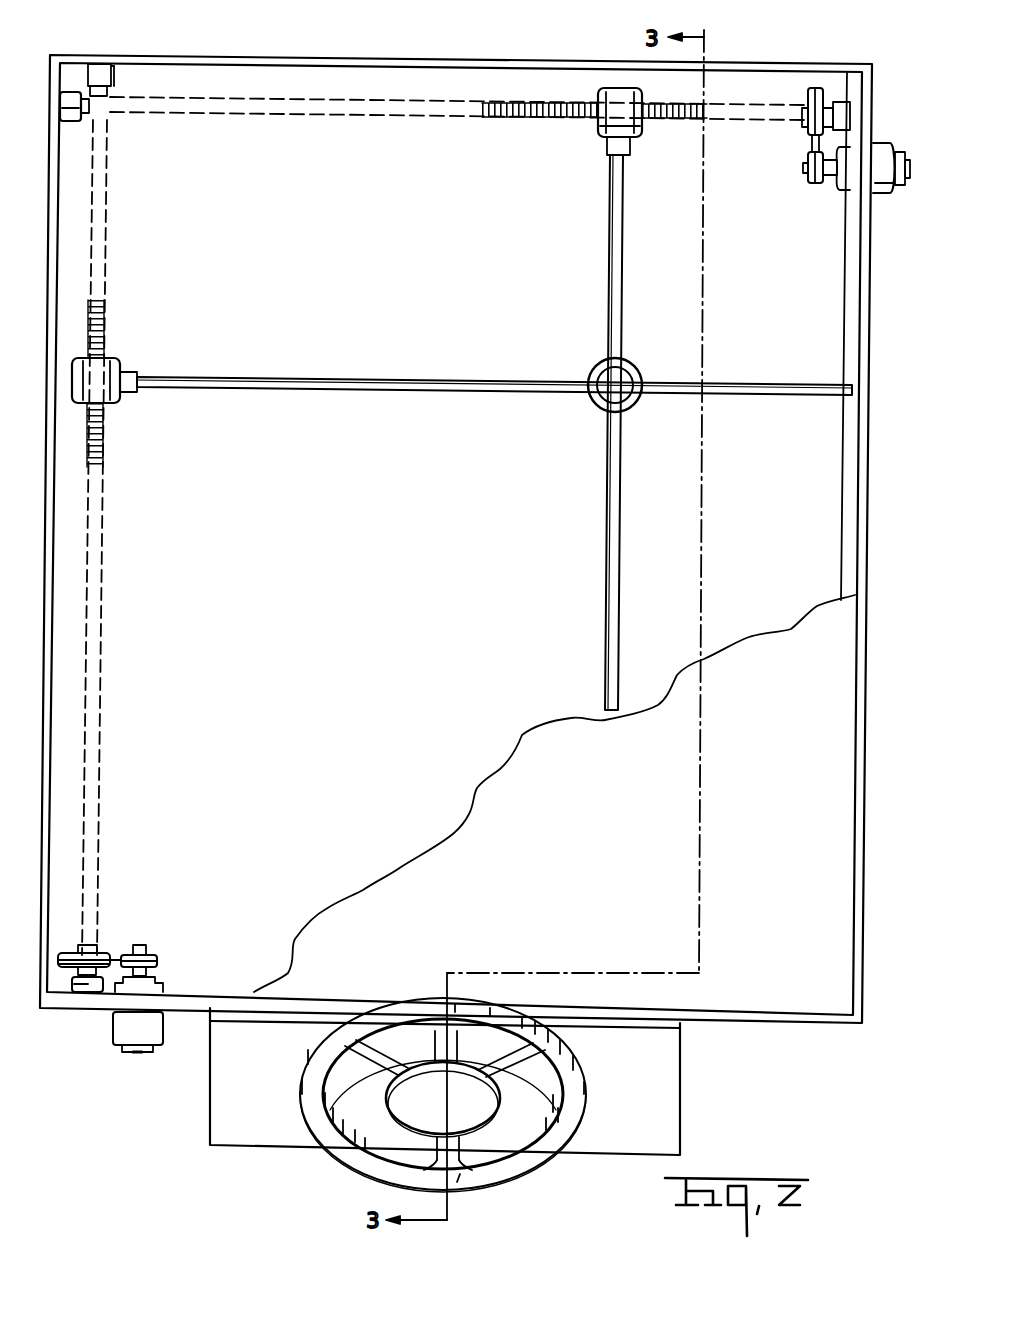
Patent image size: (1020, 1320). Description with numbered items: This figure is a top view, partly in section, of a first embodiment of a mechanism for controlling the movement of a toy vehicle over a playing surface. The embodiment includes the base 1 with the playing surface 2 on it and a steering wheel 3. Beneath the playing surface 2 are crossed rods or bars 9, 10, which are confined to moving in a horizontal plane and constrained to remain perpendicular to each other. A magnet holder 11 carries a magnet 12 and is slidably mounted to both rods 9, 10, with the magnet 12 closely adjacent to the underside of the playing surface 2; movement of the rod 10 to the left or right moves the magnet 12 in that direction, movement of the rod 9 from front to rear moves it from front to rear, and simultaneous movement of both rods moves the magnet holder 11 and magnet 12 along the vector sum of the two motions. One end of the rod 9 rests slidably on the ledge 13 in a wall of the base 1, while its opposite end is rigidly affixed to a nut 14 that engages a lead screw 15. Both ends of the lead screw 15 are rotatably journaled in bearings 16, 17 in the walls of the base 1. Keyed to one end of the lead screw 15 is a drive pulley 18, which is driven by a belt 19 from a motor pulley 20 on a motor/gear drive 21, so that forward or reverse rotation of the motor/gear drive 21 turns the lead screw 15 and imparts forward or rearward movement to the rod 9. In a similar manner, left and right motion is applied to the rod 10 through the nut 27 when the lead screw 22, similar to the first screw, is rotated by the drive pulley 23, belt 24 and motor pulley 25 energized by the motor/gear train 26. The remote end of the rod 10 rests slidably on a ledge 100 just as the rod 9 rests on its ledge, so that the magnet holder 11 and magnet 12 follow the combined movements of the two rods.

The base 1 is at (866, 756).
The playing surface 2 is at (834, 822).
The steering wheel 3 is at (330, 1135).
The rod 9 is at (360, 381).
The rod 10 is at (613, 570).
The magnet holder 11 is at (598, 405).
The magnet 12 is at (622, 382).
The ledge 13 is at (845, 480).
The nut 14 is at (117, 362).
The lead screw 15 is at (103, 497).
The bearing 16 is at (107, 72).
The bearing 17 is at (86, 984).
The drive pulley 18 is at (105, 950).
The belt 19 is at (158, 962).
The motor pulley 20 is at (148, 950).
The motor/gear drive 21 is at (152, 1026).
The lead screw 22 is at (426, 117).
The drive pulley 23 is at (806, 100).
The belt 24 is at (815, 158).
The motor pulley 25 is at (805, 168).
The motor/gear train 26 is at (887, 188).
The nut 27 is at (598, 130).
The ledge 100 is at (228, 1003).